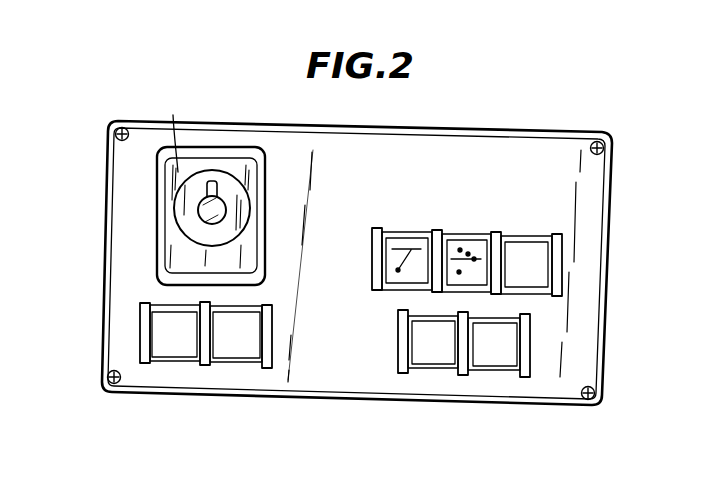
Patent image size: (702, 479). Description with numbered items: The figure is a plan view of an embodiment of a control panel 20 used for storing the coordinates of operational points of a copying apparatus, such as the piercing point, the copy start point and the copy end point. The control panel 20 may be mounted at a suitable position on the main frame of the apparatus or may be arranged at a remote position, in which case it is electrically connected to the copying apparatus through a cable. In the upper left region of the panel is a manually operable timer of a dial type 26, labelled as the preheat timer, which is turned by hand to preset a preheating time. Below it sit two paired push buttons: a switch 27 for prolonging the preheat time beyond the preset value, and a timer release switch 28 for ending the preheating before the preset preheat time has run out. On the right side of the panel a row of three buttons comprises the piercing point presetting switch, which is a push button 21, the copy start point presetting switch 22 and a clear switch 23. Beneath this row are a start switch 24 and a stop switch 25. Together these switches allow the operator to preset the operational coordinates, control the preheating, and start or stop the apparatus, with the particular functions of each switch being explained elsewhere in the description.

The control panel 20 is at (317, 398).
The piercing point presetting switch 21 is at (403, 228).
The copy start point presetting switch 22 is at (465, 232).
The clear switch 23 is at (527, 236).
The start switch 24 is at (440, 365).
The stop switch 25 is at (498, 364).
The manually operable timer of a dial type 26 is at (153, 192).
The switch for prolonging a preheat time 27 is at (173, 350).
The timer release switch 28 is at (243, 355).